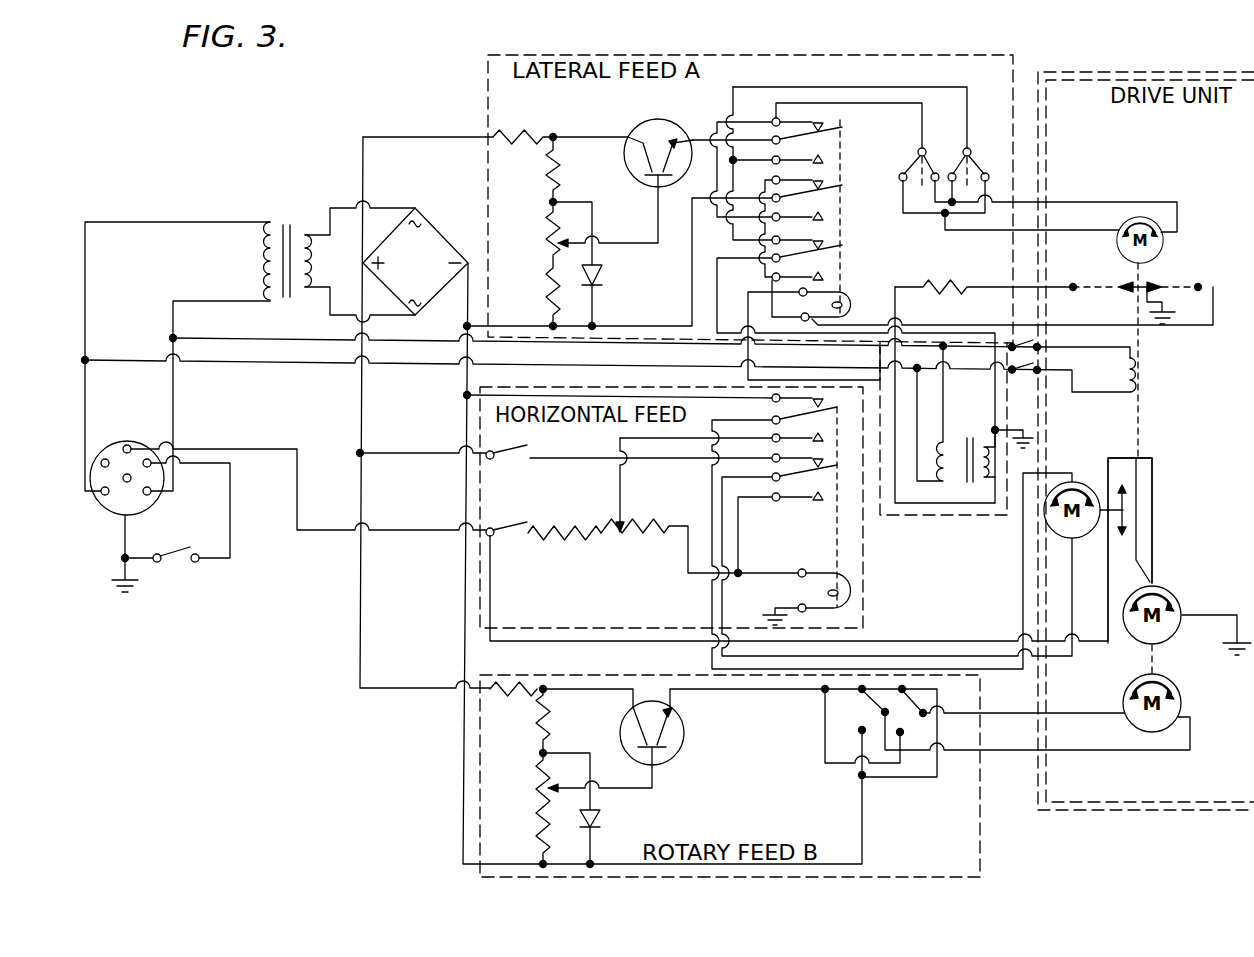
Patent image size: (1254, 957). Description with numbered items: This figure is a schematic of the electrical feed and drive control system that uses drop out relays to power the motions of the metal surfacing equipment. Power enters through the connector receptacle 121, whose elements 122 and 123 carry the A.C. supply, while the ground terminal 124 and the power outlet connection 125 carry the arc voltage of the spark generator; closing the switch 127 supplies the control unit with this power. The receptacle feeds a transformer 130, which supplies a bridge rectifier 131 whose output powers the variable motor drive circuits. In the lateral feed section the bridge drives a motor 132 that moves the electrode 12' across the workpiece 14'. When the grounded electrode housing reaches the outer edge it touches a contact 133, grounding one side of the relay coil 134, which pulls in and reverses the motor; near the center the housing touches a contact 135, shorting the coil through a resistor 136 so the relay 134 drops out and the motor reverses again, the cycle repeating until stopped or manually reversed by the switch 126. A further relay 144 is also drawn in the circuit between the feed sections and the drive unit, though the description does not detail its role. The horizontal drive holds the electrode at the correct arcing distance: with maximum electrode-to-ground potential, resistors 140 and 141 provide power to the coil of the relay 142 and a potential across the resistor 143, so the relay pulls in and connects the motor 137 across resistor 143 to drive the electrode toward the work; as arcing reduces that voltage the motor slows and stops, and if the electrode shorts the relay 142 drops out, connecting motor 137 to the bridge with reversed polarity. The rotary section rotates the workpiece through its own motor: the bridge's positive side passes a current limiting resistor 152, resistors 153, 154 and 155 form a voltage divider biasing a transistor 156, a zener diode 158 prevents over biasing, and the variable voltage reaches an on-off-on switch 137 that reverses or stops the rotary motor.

The connector plug 121 is at (113, 442).
The A.C. power element 122 is at (92, 494).
The A.C. power element 123 is at (157, 502).
The ground terminal 124 is at (122, 535).
The power outlet connection 125 is at (157, 447).
The switch 126 is at (966, 148).
The switch 127 is at (170, 560).
The transformer 130 is at (287, 223).
The bridge rectifier 131 is at (440, 232).
The motor 132 is at (1164, 248).
The contact 133 is at (1198, 284).
The relay coil 134 is at (842, 232).
The contact 135 is at (1073, 284).
The resistor / motor 136 is at (945, 282).
The motor / switch 137 is at (877, 708).
The resistor 140 is at (555, 537).
The resistor 141 is at (595, 528).
The relay 142 is at (835, 505).
The resistor 143 is at (648, 530).
The relay 144 is at (967, 422).
The current limiting resistor 152 is at (532, 700).
The resistor 153 is at (540, 720).
The resistor 154 is at (537, 793).
The resistor 155 is at (538, 845).
The transistor 156 is at (682, 725).
The zener diode 158 is at (600, 815).
The electrode 12' is at (1154, 550).
The workpiece 14' is at (1187, 621).